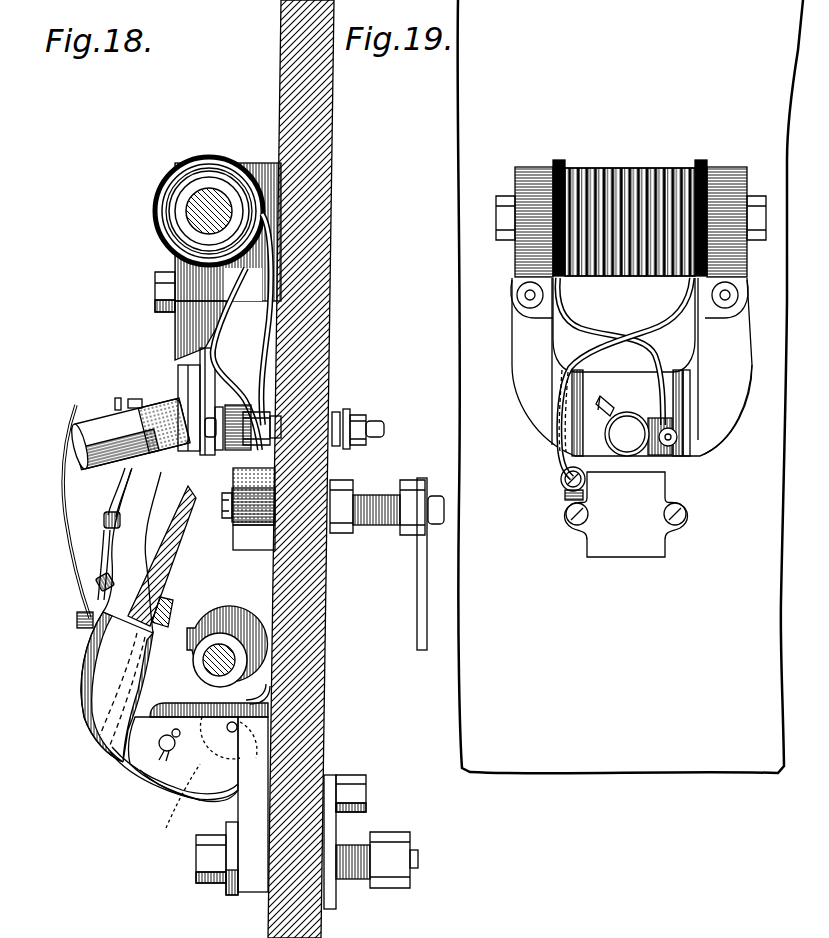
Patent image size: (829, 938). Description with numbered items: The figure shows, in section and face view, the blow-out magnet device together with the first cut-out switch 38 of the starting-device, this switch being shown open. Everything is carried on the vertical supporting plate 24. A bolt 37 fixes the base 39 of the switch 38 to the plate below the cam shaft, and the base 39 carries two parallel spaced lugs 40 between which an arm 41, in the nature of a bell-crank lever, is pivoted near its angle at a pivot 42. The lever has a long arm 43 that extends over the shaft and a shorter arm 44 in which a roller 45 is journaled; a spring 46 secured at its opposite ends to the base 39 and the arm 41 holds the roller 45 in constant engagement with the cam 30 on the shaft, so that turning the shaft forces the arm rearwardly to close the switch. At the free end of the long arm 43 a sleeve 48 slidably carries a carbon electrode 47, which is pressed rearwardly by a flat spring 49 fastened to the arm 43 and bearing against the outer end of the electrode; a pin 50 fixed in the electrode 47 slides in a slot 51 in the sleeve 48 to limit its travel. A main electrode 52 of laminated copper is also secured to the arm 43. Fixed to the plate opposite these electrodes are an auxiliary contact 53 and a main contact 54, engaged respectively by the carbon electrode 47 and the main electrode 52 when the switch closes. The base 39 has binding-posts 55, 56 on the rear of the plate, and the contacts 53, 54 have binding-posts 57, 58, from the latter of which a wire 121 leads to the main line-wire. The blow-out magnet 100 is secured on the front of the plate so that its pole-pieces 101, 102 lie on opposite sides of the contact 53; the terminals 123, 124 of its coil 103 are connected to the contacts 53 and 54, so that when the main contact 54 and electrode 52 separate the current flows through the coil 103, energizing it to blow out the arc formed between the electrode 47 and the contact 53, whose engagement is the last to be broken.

In FIG. 18, the supporting plate 24 is at (320, 694).
In FIG. 19, the supporting plate 24 is at (630, 386).
In FIG. 18, the cam 30 is at (220, 626).
In FIG. 18, the bolt 37 is at (212, 880).
In FIG. 18, the switch 38 is at (80, 692).
In FIG. 18, the base 39 is at (226, 782).
In FIG. 18, the lugs 40 is at (170, 792).
In FIG. 18, the arm 41 is at (84, 712).
In FIG. 18, the pivot 42 is at (158, 748).
In FIG. 18, the long arm 43 is at (112, 545).
In FIG. 18, the shorter arm 44 is at (171, 805).
In FIG. 18, the roller 45 is at (214, 704).
In FIG. 18, the spring 46 is at (165, 778).
In FIG. 18, the carbon electrode 47 is at (113, 410).
In FIG. 18, the sleeve 48 is at (80, 418).
In FIG. 18, the flat spring 49 is at (66, 496).
In FIG. 18, the pin 50 is at (117, 404).
In FIG. 18, the slot 51 is at (136, 402).
In FIG. 18, the main electrode 52 is at (178, 540).
In FIG. 18, the auxiliary contact 53 is at (216, 447).
In FIG. 19, the auxiliary contact 53 is at (636, 426).
In FIG. 18, the main contact 54 is at (252, 545).
In FIG. 19, the main contact 54 is at (624, 512).
In FIG. 18, the binding-post 55 is at (364, 850).
In FIG. 18, the binding-post 56 is at (352, 782).
In FIG. 18, the binding-post 57 is at (357, 418).
In FIG. 18, the binding-post 58 is at (370, 530).
In FIG. 18, the blow-out magnet 100 is at (209, 191).
In FIG. 19, the blow-out magnet 100 is at (631, 217).
In FIG. 18, the pole-piece 101 is at (186, 392).
In FIG. 19, the pole-piece 101 is at (536, 410).
In FIG. 19, the pole-piece 102 is at (705, 434).
In FIG. 18, the coil 103 is at (156, 205).
In FIG. 19, the coil 103 is at (690, 150).
In FIG. 18, the wire 121 is at (416, 604).
In FIG. 18, the terminal 123 is at (224, 306).
In FIG. 19, the terminal 123 is at (658, 368).
In FIG. 18, the terminal 124 is at (326, 300).
In FIG. 19, the terminal 124 is at (578, 344).